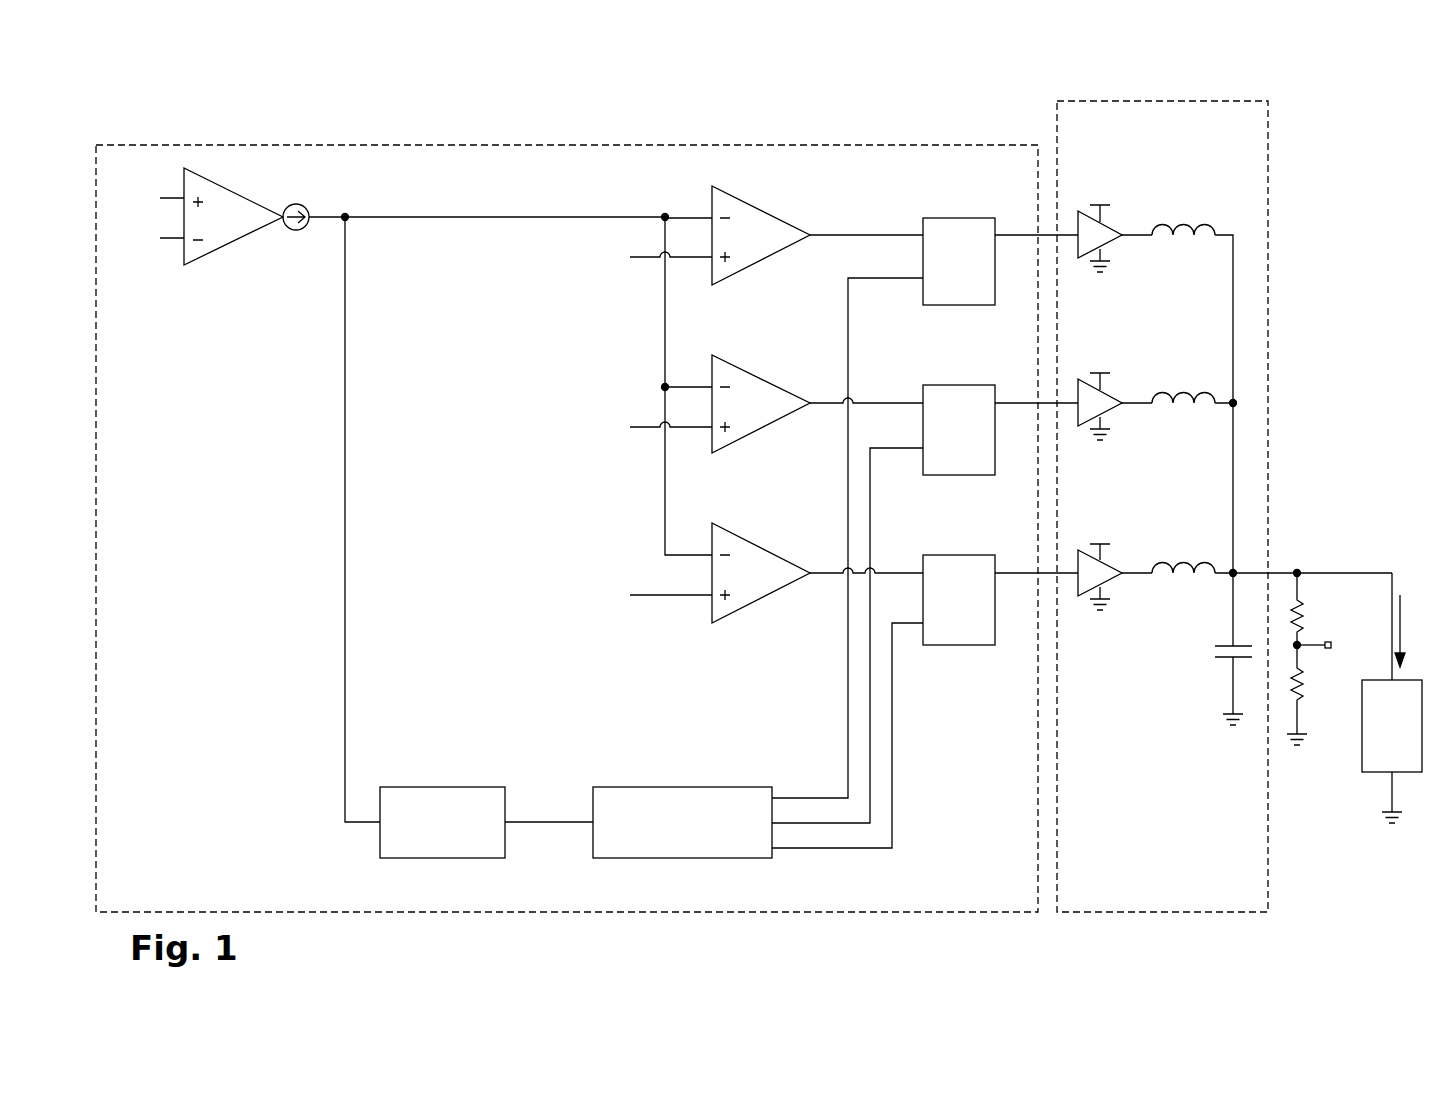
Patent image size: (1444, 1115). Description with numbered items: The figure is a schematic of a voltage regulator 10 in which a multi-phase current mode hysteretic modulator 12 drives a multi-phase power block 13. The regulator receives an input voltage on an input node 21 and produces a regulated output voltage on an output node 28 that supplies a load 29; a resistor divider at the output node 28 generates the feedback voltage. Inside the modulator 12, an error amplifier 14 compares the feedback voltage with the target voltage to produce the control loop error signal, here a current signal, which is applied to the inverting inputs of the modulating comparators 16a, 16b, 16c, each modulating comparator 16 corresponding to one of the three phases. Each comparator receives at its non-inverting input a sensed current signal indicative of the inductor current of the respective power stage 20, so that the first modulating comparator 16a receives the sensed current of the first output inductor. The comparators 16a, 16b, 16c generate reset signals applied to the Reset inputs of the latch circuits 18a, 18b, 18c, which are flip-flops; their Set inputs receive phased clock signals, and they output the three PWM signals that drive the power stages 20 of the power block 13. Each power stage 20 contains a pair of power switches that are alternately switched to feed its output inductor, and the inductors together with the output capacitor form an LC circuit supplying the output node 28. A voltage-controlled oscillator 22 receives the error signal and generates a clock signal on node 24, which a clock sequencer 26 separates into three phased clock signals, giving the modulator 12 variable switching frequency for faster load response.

The voltage regulator 10 is at (1390, 101).
The multi-phase current mode hysteretic modulator 12 is at (552, 133).
The multi-phase power block 13 is at (1293, 112).
The error amplifier 14 is at (228, 250).
The modulating comparator 16 is at (772, 198).
The first modulating comparator 16a is at (737, 272).
The modulating comparator 16b is at (737, 440).
The modulating comparator 16c is at (737, 610).
The latch circuit 18a is at (957, 218).
The latch circuit 18b is at (957, 385).
The latch circuit 18c is at (957, 555).
The power stage 20 is at (1110, 178).
The input node 21 is at (1108, 209).
The voltage-controlled oscillator 22 is at (415, 858).
The clock signal node 24 is at (556, 825).
The clock sequencer 26 is at (628, 858).
The output node 28 is at (1335, 573).
The load 29 is at (1372, 773).